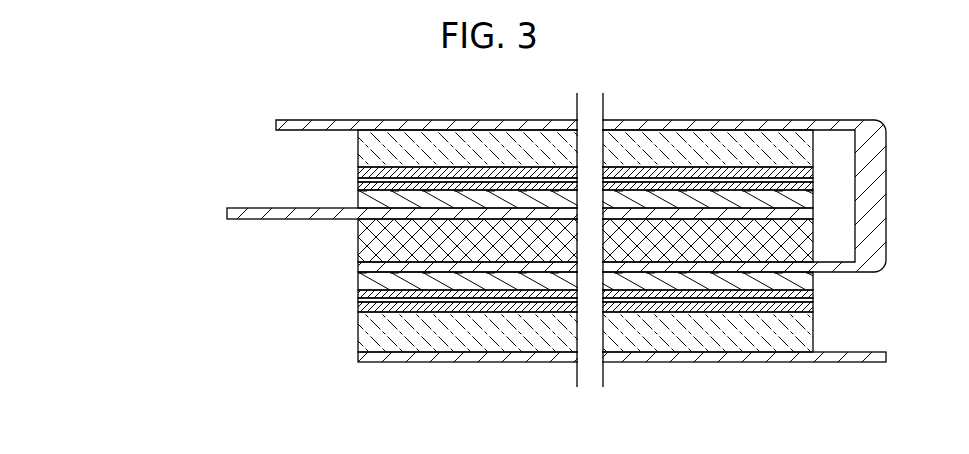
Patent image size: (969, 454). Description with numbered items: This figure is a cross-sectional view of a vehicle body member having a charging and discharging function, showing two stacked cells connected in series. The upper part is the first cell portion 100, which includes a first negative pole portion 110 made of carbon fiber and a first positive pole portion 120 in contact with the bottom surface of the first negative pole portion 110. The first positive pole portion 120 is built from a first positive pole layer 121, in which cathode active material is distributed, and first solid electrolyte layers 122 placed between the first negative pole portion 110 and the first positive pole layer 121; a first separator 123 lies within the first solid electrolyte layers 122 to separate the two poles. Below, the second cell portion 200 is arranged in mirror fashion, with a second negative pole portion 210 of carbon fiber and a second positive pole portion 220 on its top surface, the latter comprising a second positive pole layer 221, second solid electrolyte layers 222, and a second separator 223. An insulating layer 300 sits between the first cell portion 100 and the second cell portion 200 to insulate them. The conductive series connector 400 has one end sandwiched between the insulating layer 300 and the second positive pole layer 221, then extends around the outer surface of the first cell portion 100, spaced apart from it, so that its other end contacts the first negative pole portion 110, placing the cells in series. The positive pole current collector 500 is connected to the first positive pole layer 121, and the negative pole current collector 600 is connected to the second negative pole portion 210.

The first cell portion 100 is at (420, 179).
The first negative pole portion 110 is at (375, 143).
The first positive pole portion 120 is at (448, 189).
The first positive pole layer 121 is at (367, 199).
The first solid electrolyte layers 122 is at (367, 172).
The first separator 123 is at (367, 181).
The second cell portion 200 is at (488, 304).
The second negative pole portion 210 is at (372, 333).
The second positive pole portion 220 is at (517, 293).
The second positive pole layer 221 is at (370, 277).
The second solid electrolyte layers 222 is at (370, 293).
The second separator 223 is at (370, 300).
The insulating layer 300 is at (370, 239).
The series connector 400 is at (865, 136).
The positive pole current collector 500 is at (233, 219).
The negative pole current collector 600 is at (750, 353).